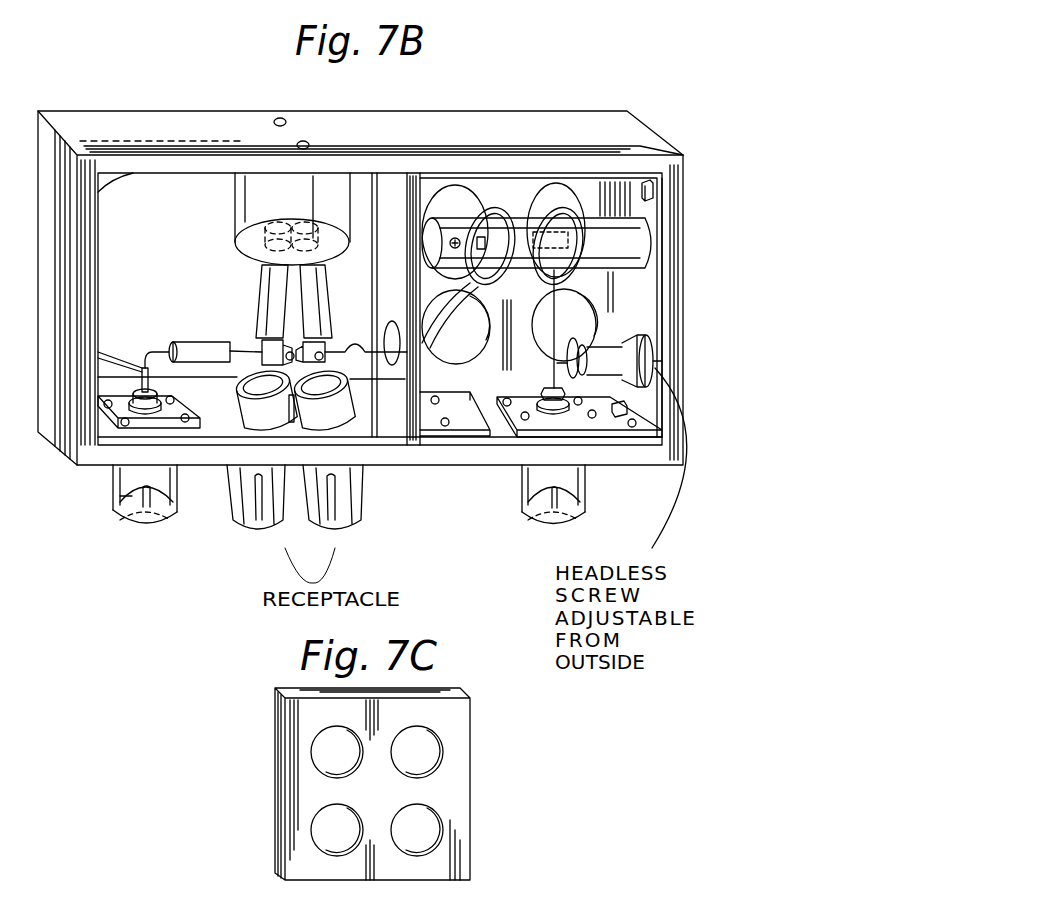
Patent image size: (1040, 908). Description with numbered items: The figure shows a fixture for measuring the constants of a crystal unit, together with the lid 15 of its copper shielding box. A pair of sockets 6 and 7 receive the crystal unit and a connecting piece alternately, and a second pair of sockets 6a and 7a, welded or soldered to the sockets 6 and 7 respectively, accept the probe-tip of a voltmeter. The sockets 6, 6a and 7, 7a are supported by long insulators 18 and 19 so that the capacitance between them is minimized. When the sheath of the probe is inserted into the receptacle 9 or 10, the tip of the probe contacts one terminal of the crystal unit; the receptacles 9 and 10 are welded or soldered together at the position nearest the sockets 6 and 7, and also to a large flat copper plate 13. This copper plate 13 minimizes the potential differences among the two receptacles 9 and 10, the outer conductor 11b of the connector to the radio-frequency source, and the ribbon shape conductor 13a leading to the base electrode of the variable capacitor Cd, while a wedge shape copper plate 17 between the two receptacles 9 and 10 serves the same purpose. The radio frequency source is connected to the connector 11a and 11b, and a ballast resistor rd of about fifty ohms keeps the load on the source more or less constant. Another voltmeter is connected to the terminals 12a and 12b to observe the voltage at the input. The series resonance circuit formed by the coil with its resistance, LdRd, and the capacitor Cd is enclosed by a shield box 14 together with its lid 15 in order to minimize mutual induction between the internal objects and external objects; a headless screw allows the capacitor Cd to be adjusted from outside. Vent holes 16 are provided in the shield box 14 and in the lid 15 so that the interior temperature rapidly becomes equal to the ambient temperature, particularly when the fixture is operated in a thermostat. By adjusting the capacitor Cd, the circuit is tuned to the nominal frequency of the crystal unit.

In FIG. 7B, the shield box 14 is at (482, 193).
In FIG. 7B, the vent holes 16 is at (560, 202).
In FIG. 7C, the vent holes 16 is at (430, 752).
In FIG. 7B, the coil Ld with resistance Rd LdRd is at (582, 185).
In FIG. 7B, the long insulator 18 is at (270, 292).
In FIG. 7B, the long insulator 19 is at (300, 292).
In FIG. 7B, the ballast resistor rd is at (190, 350).
In FIG. 7B, the socket 6a is at (268, 348).
In FIG. 7B, the socket 7a is at (325, 350).
In FIG. 7B, the socket 6 is at (253, 376).
In FIG. 7B, the socket 7 is at (305, 376).
In FIG. 7B, the wedge shape copper plate 17 is at (294, 400).
In FIG. 7B, the receptacle 9 is at (263, 524).
In FIG. 7B, the receptacle 10 is at (338, 528).
In FIG. 7B, the connector terminal to radio-frequency source 11a is at (147, 505).
In FIG. 7B, the outer conductor of connector 11b is at (125, 494).
In FIG. 7B, the terminal 12a is at (553, 500).
In FIG. 7B, the terminal 12b is at (532, 482).
In FIG. 7B, the copper plate 13 is at (512, 432).
In FIG. 7B, the variable capacitor Cd is at (607, 395).
In FIG. 7B, the ribbon shape conductor 13a is at (626, 388).
In FIG. 7C, the lid 15 is at (445, 808).